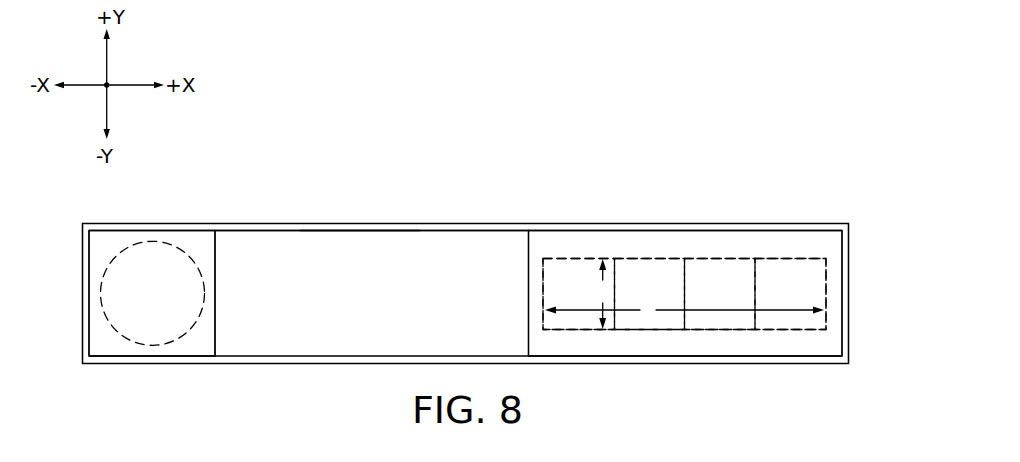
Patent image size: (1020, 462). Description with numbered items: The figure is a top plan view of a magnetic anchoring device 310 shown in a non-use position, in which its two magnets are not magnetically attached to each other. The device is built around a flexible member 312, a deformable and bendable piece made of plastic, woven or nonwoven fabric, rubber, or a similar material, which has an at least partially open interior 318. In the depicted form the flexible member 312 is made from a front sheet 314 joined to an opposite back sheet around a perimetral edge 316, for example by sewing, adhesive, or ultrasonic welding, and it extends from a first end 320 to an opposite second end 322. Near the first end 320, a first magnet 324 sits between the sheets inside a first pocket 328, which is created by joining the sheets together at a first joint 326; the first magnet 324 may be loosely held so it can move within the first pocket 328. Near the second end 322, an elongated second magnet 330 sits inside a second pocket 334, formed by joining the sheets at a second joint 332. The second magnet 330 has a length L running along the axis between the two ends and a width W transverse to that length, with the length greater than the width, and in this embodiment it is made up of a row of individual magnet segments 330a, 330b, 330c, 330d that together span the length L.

The magnetic anchoring device 310 is at (461, 257).
The flexible member 312 is at (466, 214).
The front sheet 314 is at (103, 231).
The perimetral edge 316 is at (310, 228).
The open interior 318 is at (365, 242).
The first end 320 is at (82, 292).
The second end 322 is at (849, 292).
The first magnet 324 is at (152, 242).
The first joint 326 is at (215, 293).
The first pocket 328 is at (192, 242).
The second magnet 330 is at (690, 295).
The individual magnet segment 330a is at (578, 330).
The individual magnet segment 330b is at (650, 330).
The individual magnet segment 330c is at (720, 330).
The individual magnet segment 330d is at (790, 330).
The second joint 332 is at (528, 293).
The second pocket 334 is at (777, 260).